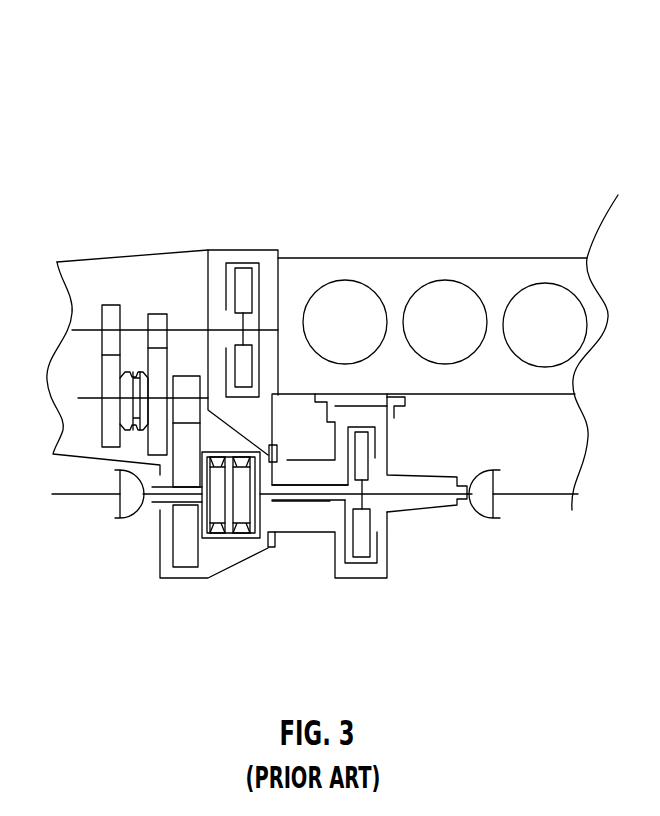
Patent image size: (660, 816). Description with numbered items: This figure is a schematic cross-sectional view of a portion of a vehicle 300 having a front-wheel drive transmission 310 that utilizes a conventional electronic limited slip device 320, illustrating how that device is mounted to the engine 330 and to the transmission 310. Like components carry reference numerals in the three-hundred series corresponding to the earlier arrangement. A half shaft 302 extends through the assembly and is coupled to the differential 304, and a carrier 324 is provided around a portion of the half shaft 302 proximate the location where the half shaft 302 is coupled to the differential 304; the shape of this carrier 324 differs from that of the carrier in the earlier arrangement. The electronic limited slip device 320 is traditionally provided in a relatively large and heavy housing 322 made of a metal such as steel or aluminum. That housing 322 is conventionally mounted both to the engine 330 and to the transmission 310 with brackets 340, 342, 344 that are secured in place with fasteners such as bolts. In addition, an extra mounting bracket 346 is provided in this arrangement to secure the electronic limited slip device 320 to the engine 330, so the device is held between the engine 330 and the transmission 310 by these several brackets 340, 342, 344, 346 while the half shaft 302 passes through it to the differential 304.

The vehicle 300 is at (262, 150).
The front-wheel drive transmission 310 is at (150, 252).
The engine 330 is at (523, 257).
The carrier 324 is at (274, 445).
The housing 322 is at (287, 457).
The mounting bracket 346 is at (302, 457).
The half shaft 302 is at (413, 492).
The bracket 340 is at (394, 418).
The electronic limited slip device 320 is at (363, 593).
The differential 304 is at (225, 506).
The bracket 344 is at (270, 462).
The bracket 342 is at (273, 548).